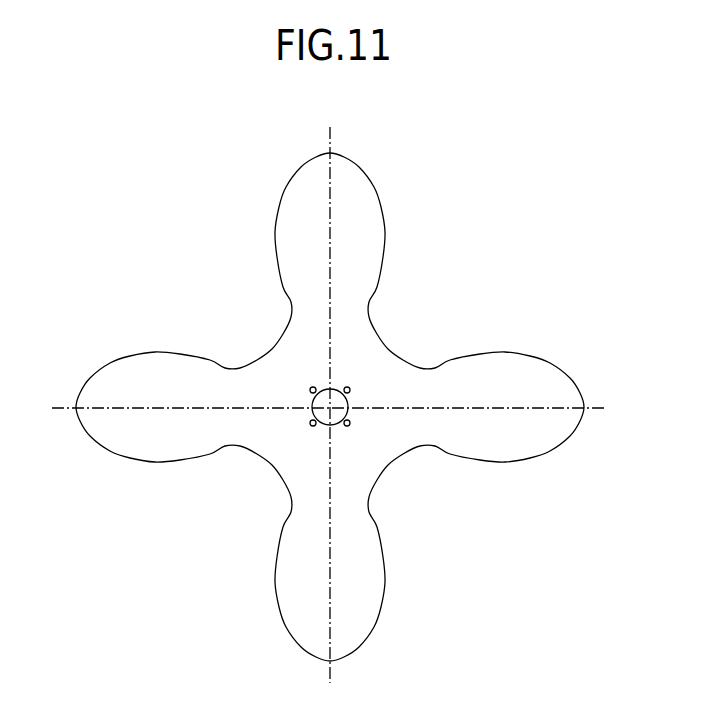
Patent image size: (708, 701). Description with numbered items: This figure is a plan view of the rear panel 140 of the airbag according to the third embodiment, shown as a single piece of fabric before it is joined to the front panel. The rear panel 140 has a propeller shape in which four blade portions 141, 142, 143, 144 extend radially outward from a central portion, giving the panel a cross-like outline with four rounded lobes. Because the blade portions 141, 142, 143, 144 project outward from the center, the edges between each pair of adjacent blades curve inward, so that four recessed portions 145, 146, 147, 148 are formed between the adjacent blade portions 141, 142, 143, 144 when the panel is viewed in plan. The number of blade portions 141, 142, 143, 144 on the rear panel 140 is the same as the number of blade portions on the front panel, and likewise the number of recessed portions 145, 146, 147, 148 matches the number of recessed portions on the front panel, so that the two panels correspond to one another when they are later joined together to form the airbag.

The rear panel 140 is at (252, 178).
The blade portion 141 is at (296, 222).
The blade portion 142 is at (160, 445).
The blade portion 143 is at (363, 573).
The blade portion 144 is at (507, 367).
The recessed portion 145 is at (283, 362).
The recessed portion 146 is at (284, 450).
The recessed portion 147 is at (376, 452).
The recessed portion 148 is at (376, 361).